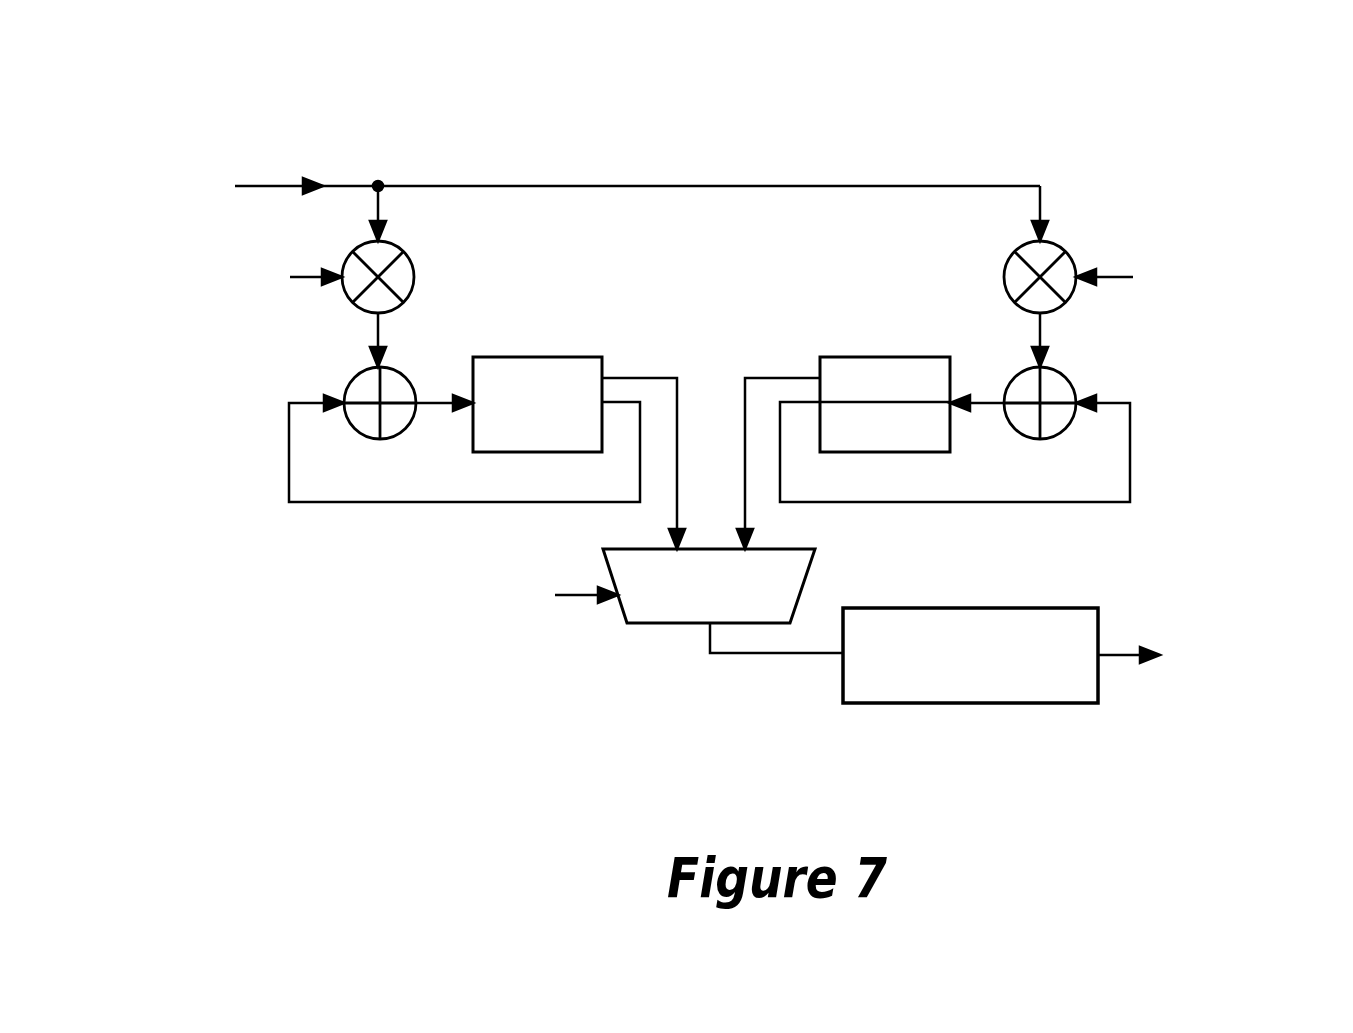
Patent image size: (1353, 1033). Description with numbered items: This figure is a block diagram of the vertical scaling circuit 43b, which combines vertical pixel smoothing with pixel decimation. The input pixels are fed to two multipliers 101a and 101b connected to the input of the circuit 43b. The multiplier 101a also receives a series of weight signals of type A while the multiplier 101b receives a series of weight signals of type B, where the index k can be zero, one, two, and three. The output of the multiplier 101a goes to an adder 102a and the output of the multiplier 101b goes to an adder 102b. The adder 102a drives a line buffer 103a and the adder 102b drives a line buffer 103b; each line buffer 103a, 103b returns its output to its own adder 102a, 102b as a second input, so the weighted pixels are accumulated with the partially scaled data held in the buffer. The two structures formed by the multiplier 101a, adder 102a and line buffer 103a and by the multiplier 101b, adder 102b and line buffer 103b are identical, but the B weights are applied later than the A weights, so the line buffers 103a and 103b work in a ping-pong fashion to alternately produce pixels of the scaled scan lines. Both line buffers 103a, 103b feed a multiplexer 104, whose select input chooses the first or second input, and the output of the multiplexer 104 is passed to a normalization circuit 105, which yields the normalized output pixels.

The vertical scaling circuit 43b is at (1240, 96).
The multiplier 101a is at (440, 237).
The multiplier 101b is at (1100, 228).
The adder 102a is at (405, 378).
The adder 102b is at (1097, 362).
The line buffer 103a is at (633, 342).
The line buffer 103b is at (952, 367).
The multiplexer 104 is at (813, 562).
The normalization circuit 105 is at (1100, 618).